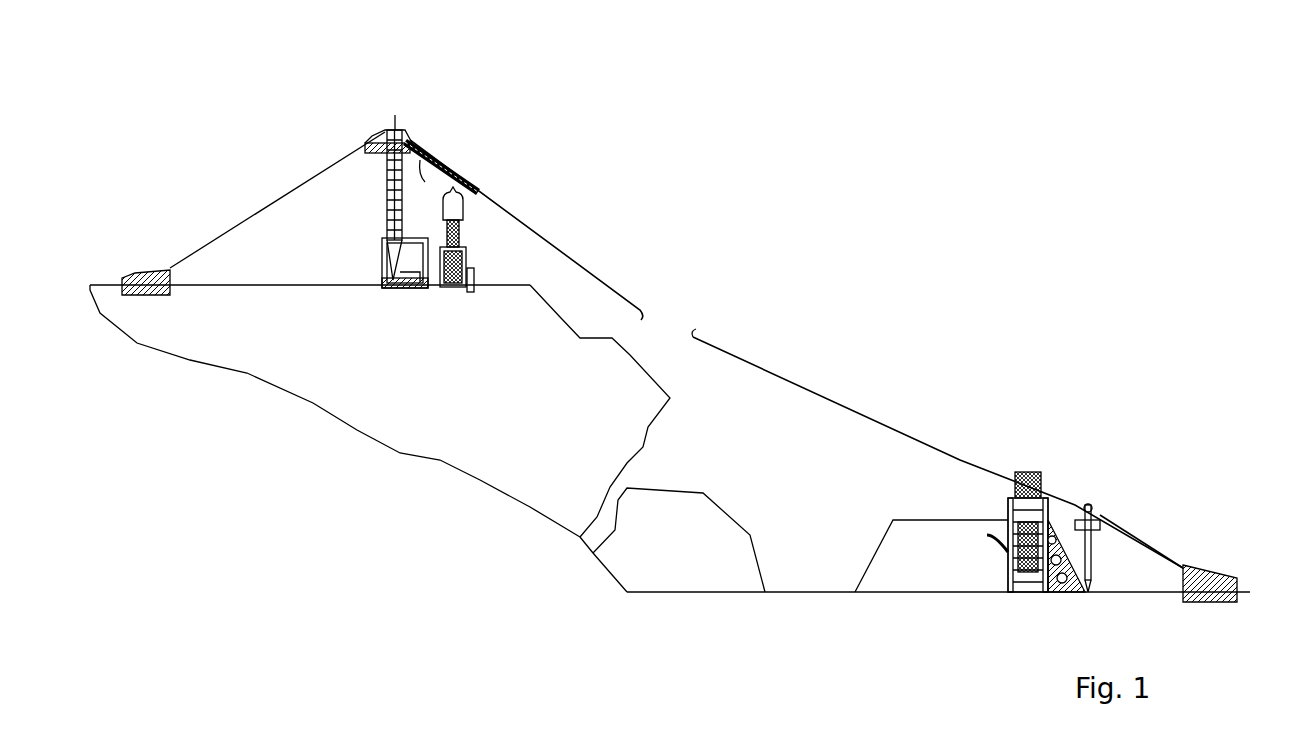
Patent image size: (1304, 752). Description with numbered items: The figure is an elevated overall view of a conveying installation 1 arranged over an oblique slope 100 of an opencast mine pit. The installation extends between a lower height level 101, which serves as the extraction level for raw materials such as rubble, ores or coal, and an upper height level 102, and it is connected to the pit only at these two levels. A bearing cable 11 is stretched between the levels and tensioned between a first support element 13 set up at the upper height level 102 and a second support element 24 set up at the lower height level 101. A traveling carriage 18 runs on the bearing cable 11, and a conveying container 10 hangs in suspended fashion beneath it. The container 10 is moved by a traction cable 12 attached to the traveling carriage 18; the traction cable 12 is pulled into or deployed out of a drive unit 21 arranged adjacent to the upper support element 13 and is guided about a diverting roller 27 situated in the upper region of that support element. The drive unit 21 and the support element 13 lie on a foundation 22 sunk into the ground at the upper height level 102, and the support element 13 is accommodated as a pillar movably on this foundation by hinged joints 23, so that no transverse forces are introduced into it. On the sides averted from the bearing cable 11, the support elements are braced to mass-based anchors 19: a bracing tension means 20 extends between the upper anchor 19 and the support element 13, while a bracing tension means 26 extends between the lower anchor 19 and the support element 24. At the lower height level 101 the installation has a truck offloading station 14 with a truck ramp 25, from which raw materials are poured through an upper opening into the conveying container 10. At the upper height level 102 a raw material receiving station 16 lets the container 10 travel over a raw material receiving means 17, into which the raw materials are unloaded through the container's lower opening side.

The conveying installation 1 is at (900, 185).
The conveying container 10 is at (457, 212).
The bearing cable 11 is at (613, 287).
The traction cable 12 is at (408, 238).
The first support element 13 is at (387, 197).
The truck offloading station 14 is at (1087, 460).
The raw material receiving station 16 is at (477, 233).
The raw material receiving means 17 is at (467, 260).
The traveling carriage 18 is at (450, 173).
The mass-based anchor 19 is at (150, 265).
The bracing tension means 20 is at (263, 207).
The drive unit 21 is at (417, 287).
The foundation 22 is at (392, 293).
The hinged joints 23 is at (383, 275).
The second support element 24 is at (1090, 515).
The truck ramp 25 is at (940, 520).
The bracing tension means 26 is at (1150, 543).
The diverting roller 27 is at (410, 130).
The oblique slope 100 is at (630, 353).
The lower height level 101 is at (1156, 588).
The upper height level 102 is at (258, 284).